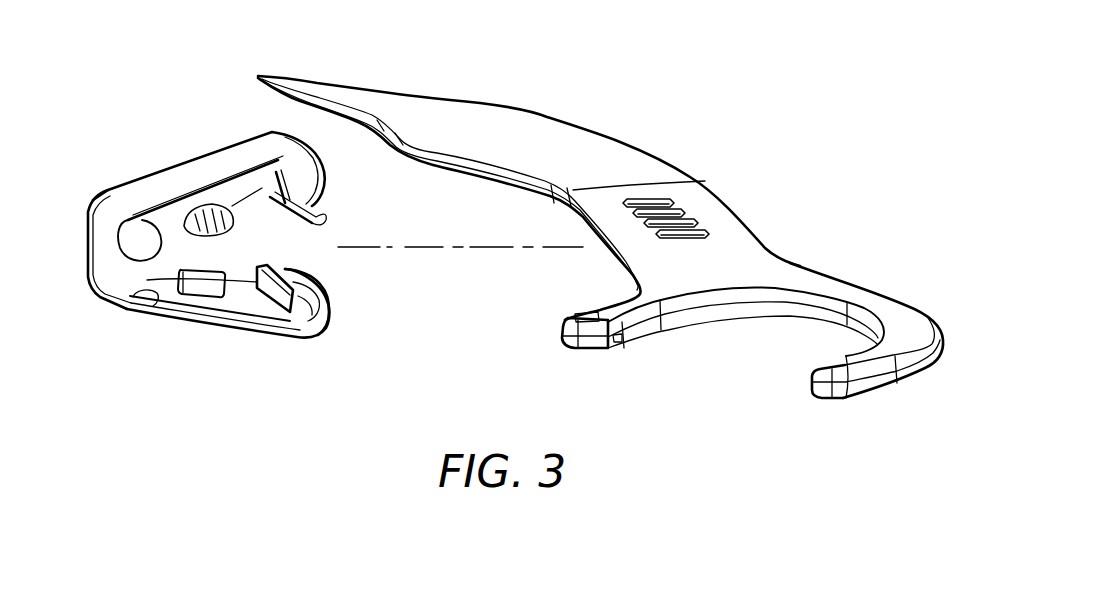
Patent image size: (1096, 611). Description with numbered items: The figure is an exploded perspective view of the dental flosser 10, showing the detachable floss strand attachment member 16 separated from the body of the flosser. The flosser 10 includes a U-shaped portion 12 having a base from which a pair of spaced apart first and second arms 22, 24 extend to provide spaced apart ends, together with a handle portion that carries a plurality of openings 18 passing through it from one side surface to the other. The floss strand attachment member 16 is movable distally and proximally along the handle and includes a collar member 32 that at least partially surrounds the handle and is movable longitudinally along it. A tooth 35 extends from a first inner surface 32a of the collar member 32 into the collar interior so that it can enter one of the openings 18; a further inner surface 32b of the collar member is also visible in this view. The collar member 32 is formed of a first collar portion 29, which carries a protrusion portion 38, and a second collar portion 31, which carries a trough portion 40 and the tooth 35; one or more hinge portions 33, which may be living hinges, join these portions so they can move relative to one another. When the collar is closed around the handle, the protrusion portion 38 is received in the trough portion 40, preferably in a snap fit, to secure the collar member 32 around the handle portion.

The dental flosser 10 is at (752, 106).
The U-shaped portion 12 is at (902, 317).
The floss strand attachment member 16 is at (80, 168).
The openings 18 is at (683, 213).
The first arm 22 is at (823, 380).
The second arm 24 is at (583, 340).
The first collar portion 29 is at (280, 326).
The second collar portion 31 is at (238, 157).
The collar member 32 is at (157, 183).
The first inner surface 32a is at (242, 294).
The end wall inner surface 32b is at (152, 249).
The hinge portions 33 is at (140, 234).
The tooth 35 is at (203, 288).
The protrusion portion 38 is at (310, 226).
The trough portion 40 is at (304, 317).